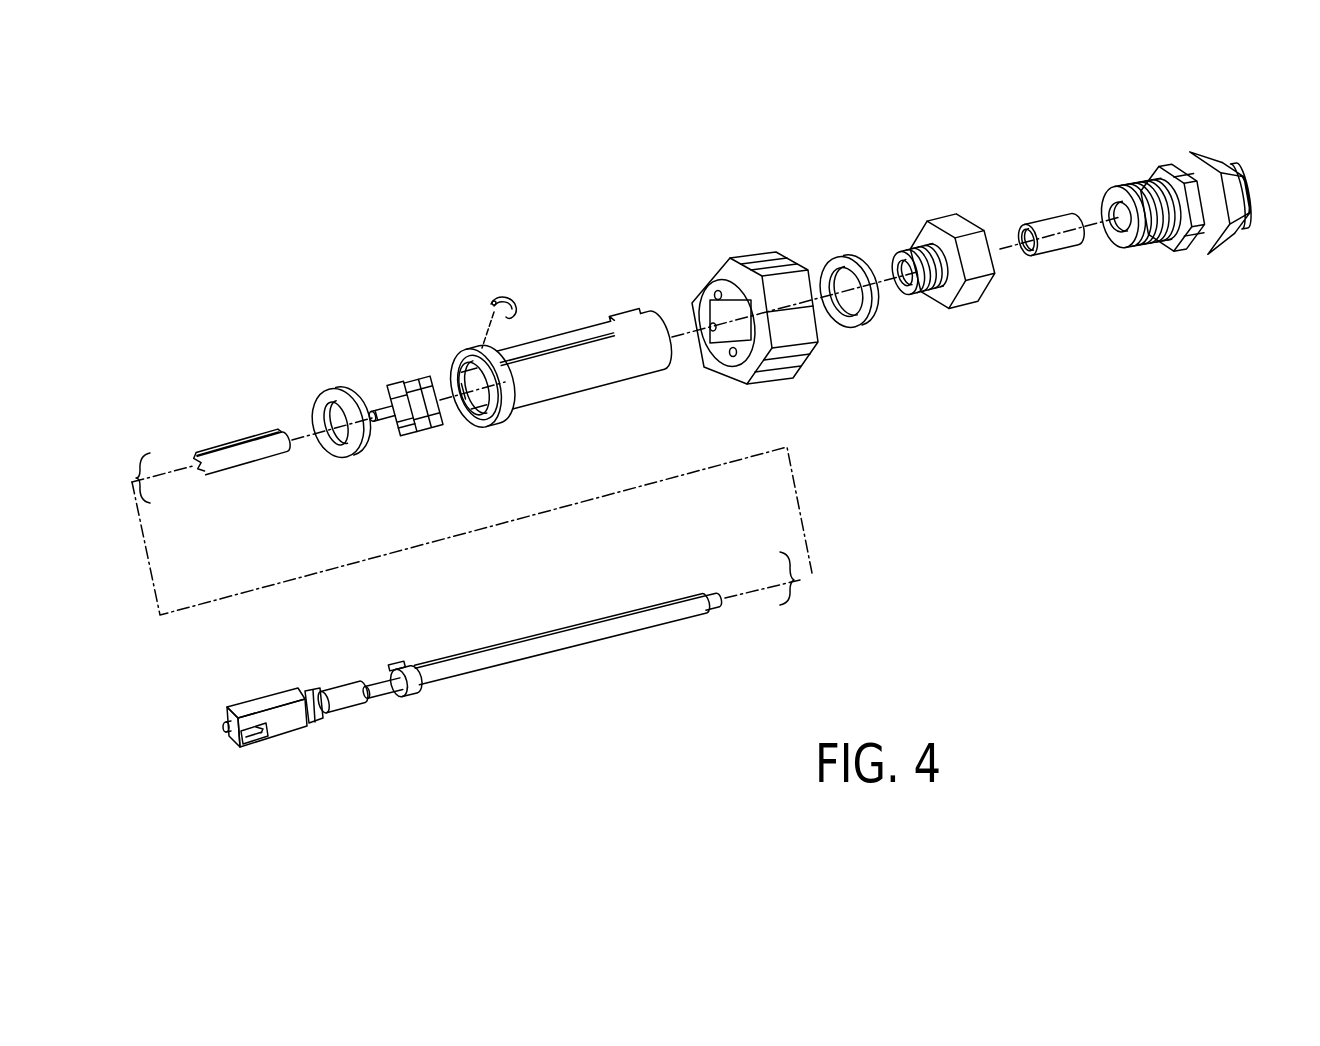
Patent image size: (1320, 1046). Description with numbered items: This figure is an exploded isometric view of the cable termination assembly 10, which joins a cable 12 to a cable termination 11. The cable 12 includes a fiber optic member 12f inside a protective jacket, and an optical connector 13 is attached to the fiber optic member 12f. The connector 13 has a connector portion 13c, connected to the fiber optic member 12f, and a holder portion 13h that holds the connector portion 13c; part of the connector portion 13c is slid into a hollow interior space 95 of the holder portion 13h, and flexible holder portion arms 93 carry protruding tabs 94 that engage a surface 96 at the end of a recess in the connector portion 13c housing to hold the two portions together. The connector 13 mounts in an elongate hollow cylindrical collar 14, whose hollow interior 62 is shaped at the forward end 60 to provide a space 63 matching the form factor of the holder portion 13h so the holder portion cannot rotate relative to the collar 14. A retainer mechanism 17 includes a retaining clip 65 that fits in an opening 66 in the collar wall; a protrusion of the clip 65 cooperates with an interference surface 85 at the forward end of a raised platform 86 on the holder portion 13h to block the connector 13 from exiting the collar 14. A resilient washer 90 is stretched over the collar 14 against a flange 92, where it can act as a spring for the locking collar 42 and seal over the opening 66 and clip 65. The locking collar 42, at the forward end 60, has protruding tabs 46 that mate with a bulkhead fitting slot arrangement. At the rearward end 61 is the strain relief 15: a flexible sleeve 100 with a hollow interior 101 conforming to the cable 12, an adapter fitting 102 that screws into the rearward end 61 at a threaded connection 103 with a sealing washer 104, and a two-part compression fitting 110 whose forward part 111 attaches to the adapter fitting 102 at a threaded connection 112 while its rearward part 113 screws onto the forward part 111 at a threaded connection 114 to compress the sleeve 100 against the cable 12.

The cable termination assembly 10 is at (398, 272).
The cable termination 11 is at (584, 364).
The cable 12 is at (233, 441).
The fiber optic member 12f is at (163, 474).
The optical connector 13 is at (295, 719).
The connector portion 13c is at (270, 693).
The holder portion 13h is at (423, 403).
The collar 14 is at (557, 349).
The strain relief 15 is at (1061, 265).
The retainer mechanism 17 is at (520, 279).
The locking collar 42 is at (747, 305).
The protruding tabs 46 is at (716, 298).
The forward end 60 is at (584, 392).
The rearward end 61 is at (624, 315).
The hollow interior 62 is at (474, 388).
The space 63 is at (464, 397).
The retaining clip 65 is at (507, 296).
The opening 66 is at (482, 386).
The interference surface 85 is at (397, 415).
The raised platform 86 is at (381, 414).
The washer 90 is at (317, 397).
The flange 92 is at (447, 372).
The holder portion arms 93 is at (402, 408).
The protruding tabs 94 is at (331, 405).
The hollow interior space 95 is at (406, 426).
The surface 96 is at (287, 733).
The sleeve 100 is at (1031, 259).
The hollow interior 101 is at (1010, 236).
The adapter fitting 102 is at (947, 254).
The threaded connection 103 is at (920, 300).
The sealing washer 104 is at (862, 328).
The compression fitting 110 is at (1184, 211).
The forward part 111 is at (1165, 166).
The threaded connection 112 is at (1135, 252).
The rearward part 113 is at (1198, 152).
The threaded connection 114 is at (1199, 252).